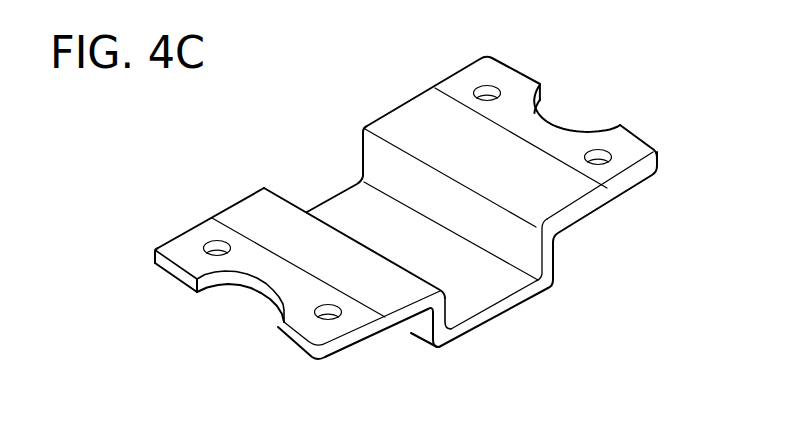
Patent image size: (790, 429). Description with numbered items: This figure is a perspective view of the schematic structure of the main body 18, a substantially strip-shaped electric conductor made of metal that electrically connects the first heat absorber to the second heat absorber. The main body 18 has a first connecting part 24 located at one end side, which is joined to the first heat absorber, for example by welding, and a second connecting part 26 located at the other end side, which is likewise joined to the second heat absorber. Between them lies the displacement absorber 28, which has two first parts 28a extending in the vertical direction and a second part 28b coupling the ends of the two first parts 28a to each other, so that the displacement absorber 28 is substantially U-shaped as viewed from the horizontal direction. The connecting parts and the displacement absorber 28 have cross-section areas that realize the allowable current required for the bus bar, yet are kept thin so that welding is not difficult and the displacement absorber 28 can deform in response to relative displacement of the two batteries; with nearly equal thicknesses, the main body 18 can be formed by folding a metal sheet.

The main body 18 is at (395, 207).
The first connecting part 24 is at (176, 239).
The second connecting part 26 is at (467, 70).
The displacement absorber 28 is at (446, 223).
The first part 28a is at (554, 256).
The second part 28b is at (497, 314).